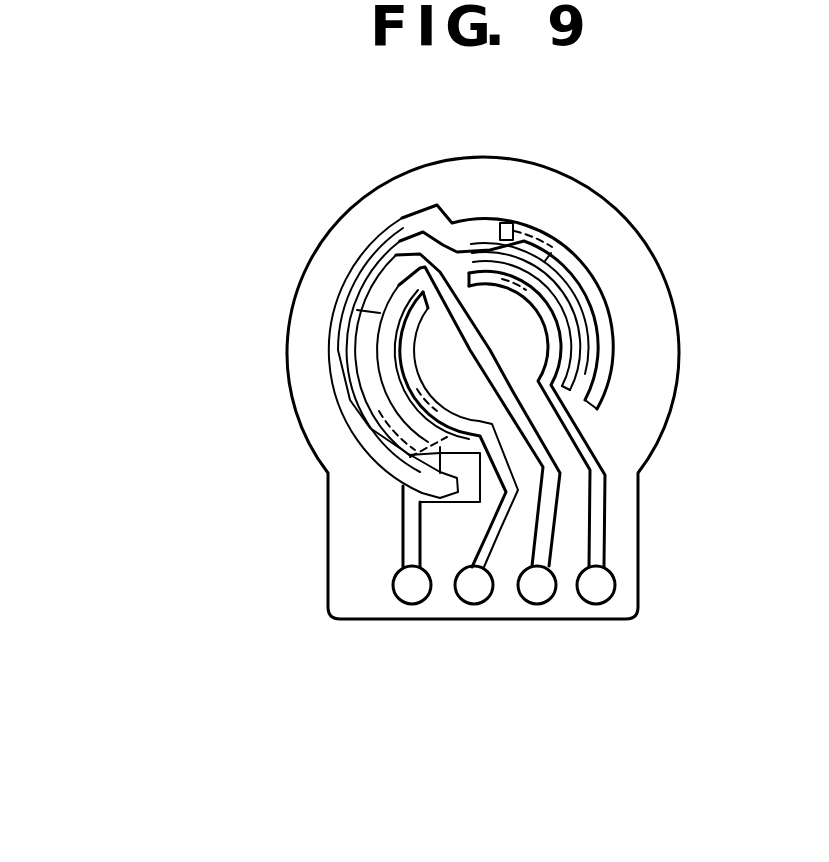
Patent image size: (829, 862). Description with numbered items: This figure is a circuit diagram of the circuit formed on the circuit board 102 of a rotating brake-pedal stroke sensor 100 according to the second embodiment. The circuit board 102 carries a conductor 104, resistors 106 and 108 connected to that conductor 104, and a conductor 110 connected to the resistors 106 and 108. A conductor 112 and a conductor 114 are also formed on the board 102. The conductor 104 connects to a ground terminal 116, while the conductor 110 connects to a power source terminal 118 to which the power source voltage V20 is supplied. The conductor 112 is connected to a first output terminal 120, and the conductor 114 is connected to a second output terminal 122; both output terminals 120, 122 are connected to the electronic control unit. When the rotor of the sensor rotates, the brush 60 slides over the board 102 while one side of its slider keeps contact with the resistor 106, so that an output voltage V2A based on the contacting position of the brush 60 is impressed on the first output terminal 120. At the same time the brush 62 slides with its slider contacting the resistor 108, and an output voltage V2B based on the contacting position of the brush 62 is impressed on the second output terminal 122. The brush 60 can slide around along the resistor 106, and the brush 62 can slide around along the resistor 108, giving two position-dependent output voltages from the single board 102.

The brake-pedal stroke sensor 100 is at (313, 216).
The circuit board 102 is at (681, 350).
The conductor 104 is at (450, 272).
The resistor 106 is at (583, 270).
The resistor 108 is at (363, 360).
The conductor 110 is at (418, 204).
The conductor 112 is at (607, 500).
The conductor 114 is at (497, 530).
The ground terminal 116 is at (537, 607).
The power source terminal 118 is at (413, 607).
The first output terminal 120 is at (600, 607).
The second output terminal 122 is at (475, 607).
The brush 60 is at (507, 227).
The brush 62 is at (390, 428).